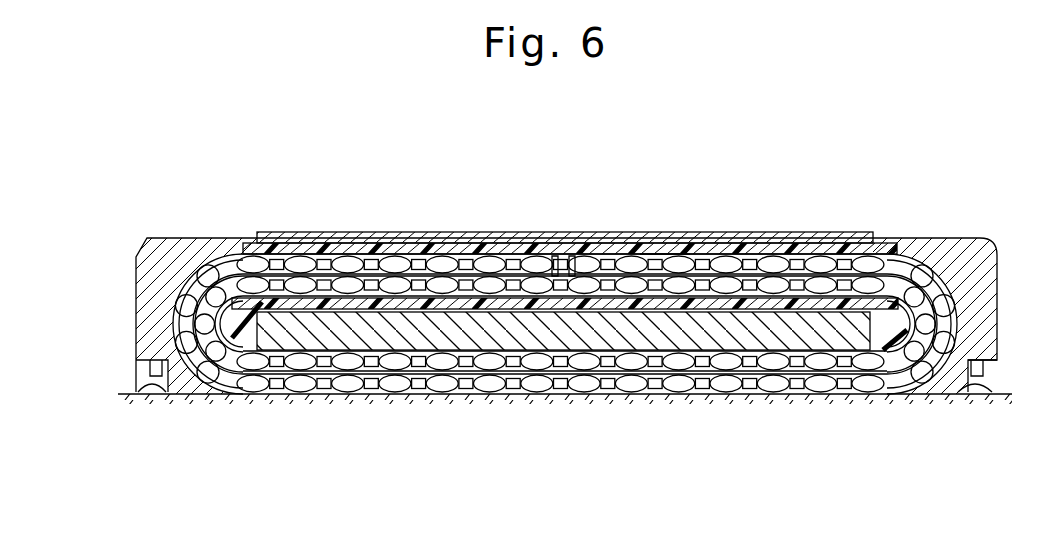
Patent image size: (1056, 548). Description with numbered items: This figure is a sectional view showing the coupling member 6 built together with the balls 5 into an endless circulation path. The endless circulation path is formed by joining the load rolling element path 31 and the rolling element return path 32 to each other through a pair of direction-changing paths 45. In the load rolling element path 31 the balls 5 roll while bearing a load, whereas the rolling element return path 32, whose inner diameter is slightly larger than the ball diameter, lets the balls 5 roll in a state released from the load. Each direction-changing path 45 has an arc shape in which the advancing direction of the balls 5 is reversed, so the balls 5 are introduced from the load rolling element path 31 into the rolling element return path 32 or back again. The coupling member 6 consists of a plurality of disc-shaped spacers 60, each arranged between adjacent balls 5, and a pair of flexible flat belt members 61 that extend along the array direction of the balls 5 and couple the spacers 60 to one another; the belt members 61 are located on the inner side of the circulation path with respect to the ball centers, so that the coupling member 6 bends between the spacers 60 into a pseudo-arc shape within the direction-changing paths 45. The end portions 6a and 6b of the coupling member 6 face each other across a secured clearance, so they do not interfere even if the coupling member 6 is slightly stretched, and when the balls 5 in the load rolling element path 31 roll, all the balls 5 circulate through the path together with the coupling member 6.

The ball 5 is at (778, 256).
The coupling member 6 is at (897, 254).
The end portion 6a is at (572, 253).
The end portion 6b is at (548, 253).
The load rolling element path 31 is at (610, 394).
The rolling element return path 32 is at (375, 231).
The direction-changing path 45 is at (178, 304).
The spacer 60 is at (500, 243).
The belt member 61 is at (664, 250).